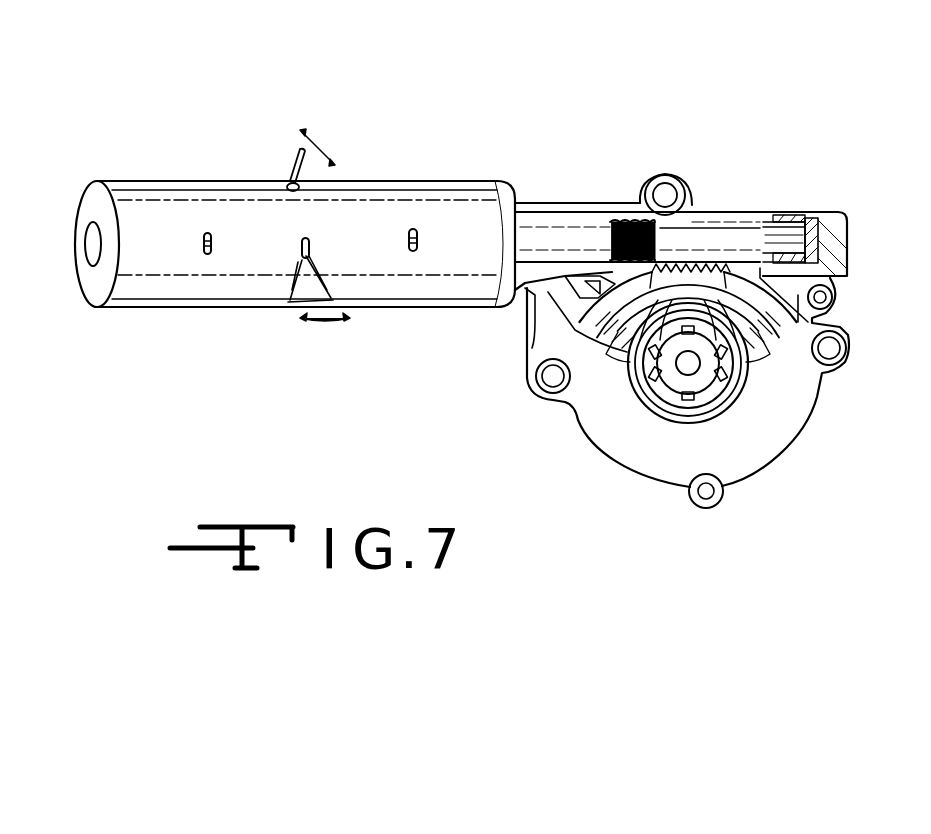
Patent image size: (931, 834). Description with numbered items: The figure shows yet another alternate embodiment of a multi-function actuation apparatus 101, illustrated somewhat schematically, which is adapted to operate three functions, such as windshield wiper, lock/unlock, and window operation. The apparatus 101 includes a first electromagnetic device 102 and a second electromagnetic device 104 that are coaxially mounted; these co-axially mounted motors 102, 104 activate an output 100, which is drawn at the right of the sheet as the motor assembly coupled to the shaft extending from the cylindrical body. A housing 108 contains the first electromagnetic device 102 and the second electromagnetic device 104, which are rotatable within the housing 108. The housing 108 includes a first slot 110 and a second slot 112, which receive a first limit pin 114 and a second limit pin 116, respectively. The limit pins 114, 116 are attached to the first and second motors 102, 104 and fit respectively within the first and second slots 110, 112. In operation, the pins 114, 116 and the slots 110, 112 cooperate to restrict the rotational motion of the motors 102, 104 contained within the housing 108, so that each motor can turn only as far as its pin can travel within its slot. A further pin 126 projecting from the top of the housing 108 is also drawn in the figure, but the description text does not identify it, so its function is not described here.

The output 100 is at (778, 462).
The multi-function actuation apparatus 101 is at (315, 67).
The first electromagnetic device 102 is at (172, 150).
The second electromagnetic device 104 is at (478, 205).
The housing 108 is at (375, 183).
The first slot 110 is at (207, 257).
The second slot 112 is at (415, 253).
The first limit pin 114 is at (203, 243).
The second limit pin 116 is at (422, 235).
The actuating pin 126 is at (290, 160).